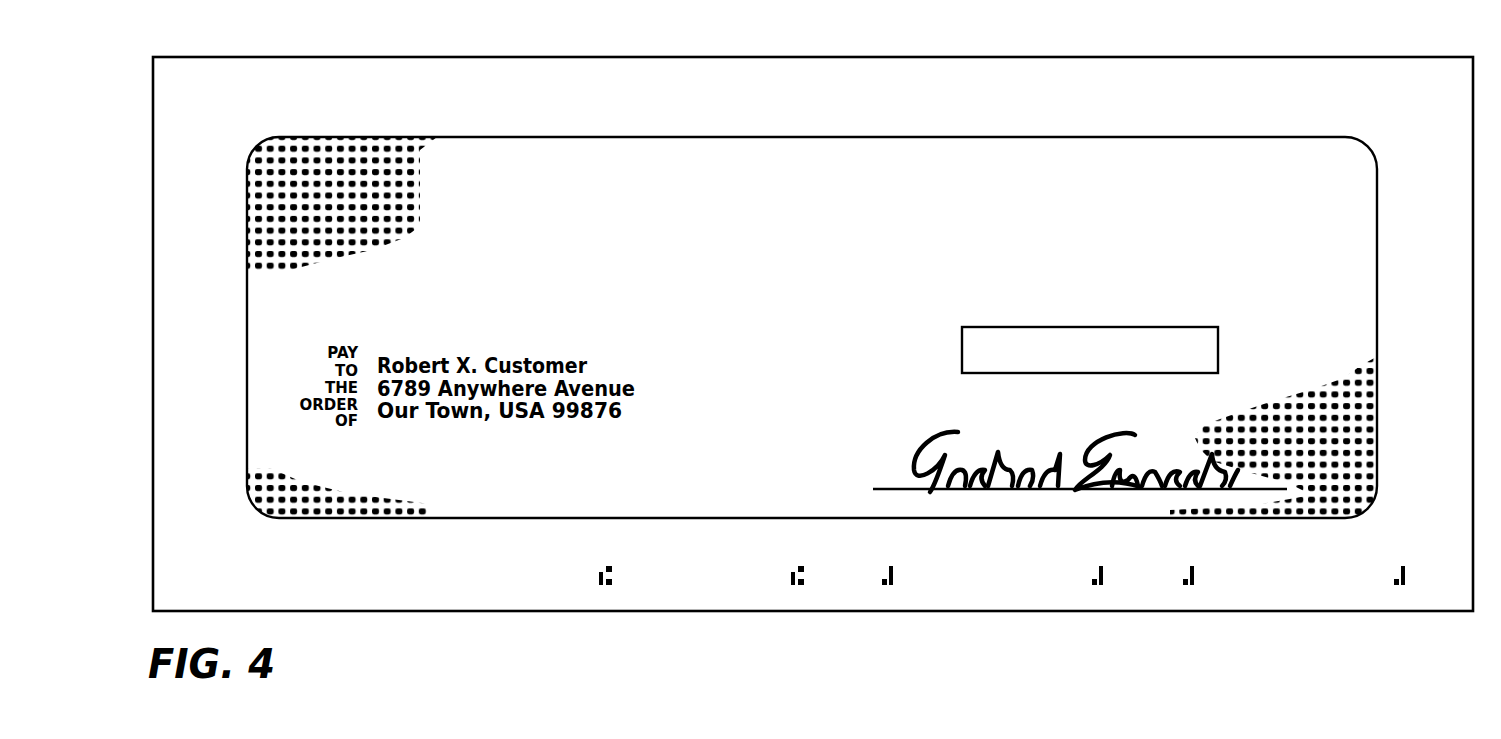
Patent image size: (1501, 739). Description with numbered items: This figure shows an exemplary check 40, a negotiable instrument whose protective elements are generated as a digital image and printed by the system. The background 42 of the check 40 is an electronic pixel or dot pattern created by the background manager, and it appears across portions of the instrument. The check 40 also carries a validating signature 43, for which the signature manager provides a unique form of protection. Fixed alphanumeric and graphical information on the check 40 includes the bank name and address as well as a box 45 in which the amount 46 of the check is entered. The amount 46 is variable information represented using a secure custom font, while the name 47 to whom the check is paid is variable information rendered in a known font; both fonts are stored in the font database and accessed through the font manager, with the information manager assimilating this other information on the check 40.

The check 40 is at (625, 57).
The background 42 is at (337, 175).
The validating signature 43 is at (918, 436).
The box 45 is at (1196, 327).
The amount 46 is at (978, 382).
The name 47 is at (736, 174).